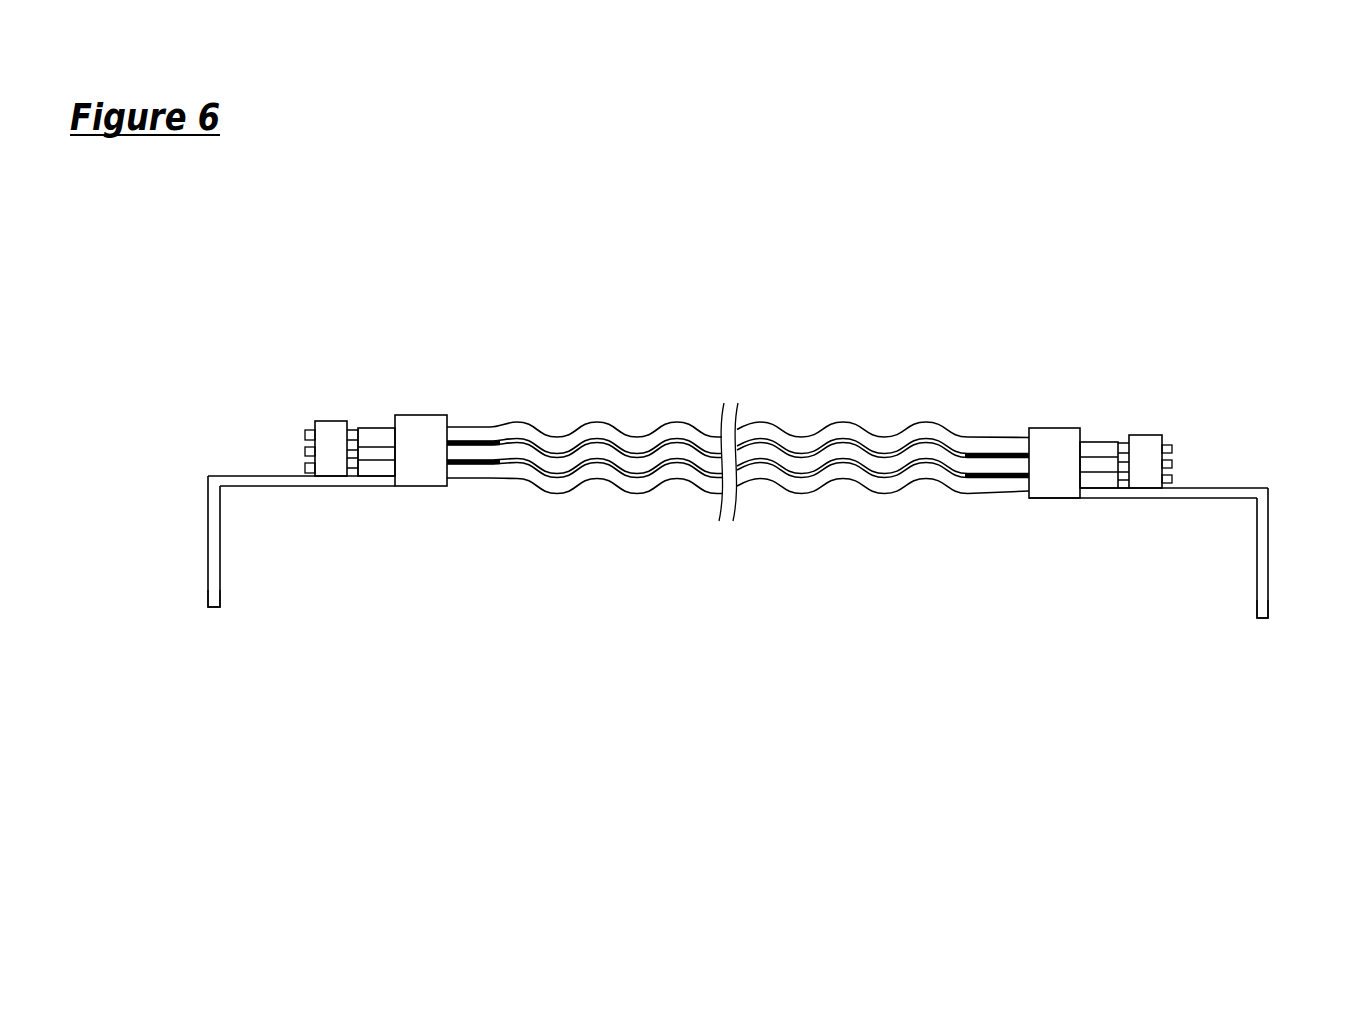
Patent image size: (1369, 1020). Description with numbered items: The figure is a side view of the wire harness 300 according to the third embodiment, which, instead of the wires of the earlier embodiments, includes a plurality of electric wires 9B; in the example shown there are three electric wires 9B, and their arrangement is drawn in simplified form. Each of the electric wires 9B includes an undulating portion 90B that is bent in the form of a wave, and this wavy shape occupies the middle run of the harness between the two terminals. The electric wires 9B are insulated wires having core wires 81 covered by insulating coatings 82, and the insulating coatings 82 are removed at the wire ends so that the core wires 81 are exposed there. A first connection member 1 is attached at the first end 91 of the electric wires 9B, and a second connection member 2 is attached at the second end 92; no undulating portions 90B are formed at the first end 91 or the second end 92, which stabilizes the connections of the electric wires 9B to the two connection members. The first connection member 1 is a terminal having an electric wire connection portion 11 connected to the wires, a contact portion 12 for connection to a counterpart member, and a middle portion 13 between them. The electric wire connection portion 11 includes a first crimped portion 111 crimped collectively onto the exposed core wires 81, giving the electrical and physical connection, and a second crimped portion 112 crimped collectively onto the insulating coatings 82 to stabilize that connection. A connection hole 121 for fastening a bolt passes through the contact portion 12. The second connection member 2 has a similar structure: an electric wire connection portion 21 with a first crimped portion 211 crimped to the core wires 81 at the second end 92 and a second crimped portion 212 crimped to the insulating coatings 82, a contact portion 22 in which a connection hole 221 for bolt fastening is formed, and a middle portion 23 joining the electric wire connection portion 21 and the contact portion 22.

The wire harness 300 is at (1212, 196).
The first connection member 1 is at (1292, 455).
The electric wire connection portion 11 is at (1172, 572).
The first crimped portion 111 is at (1145, 470).
The second crimped portion 112 is at (1060, 467).
The contact portion 12 is at (1268, 520).
The connection hole 121 is at (1270, 585).
The middle portion 13 is at (1247, 487).
The second connection member 2 is at (216, 438).
The electric wire connection portion 21 is at (442, 560).
The first crimped portion 211 is at (333, 452).
The second crimped portion 212 is at (418, 455).
The contact portion 22 is at (208, 525).
The connection hole 221 is at (207, 590).
The middle portion 23 is at (258, 476).
The core wires 81 is at (1123, 446).
The insulating coatings 82 is at (1092, 444).
The undulating portion 90B is at (765, 398).
The first end 91 is at (999, 428).
The second end 92 is at (484, 398).
The electric wires 9B is at (503, 470).